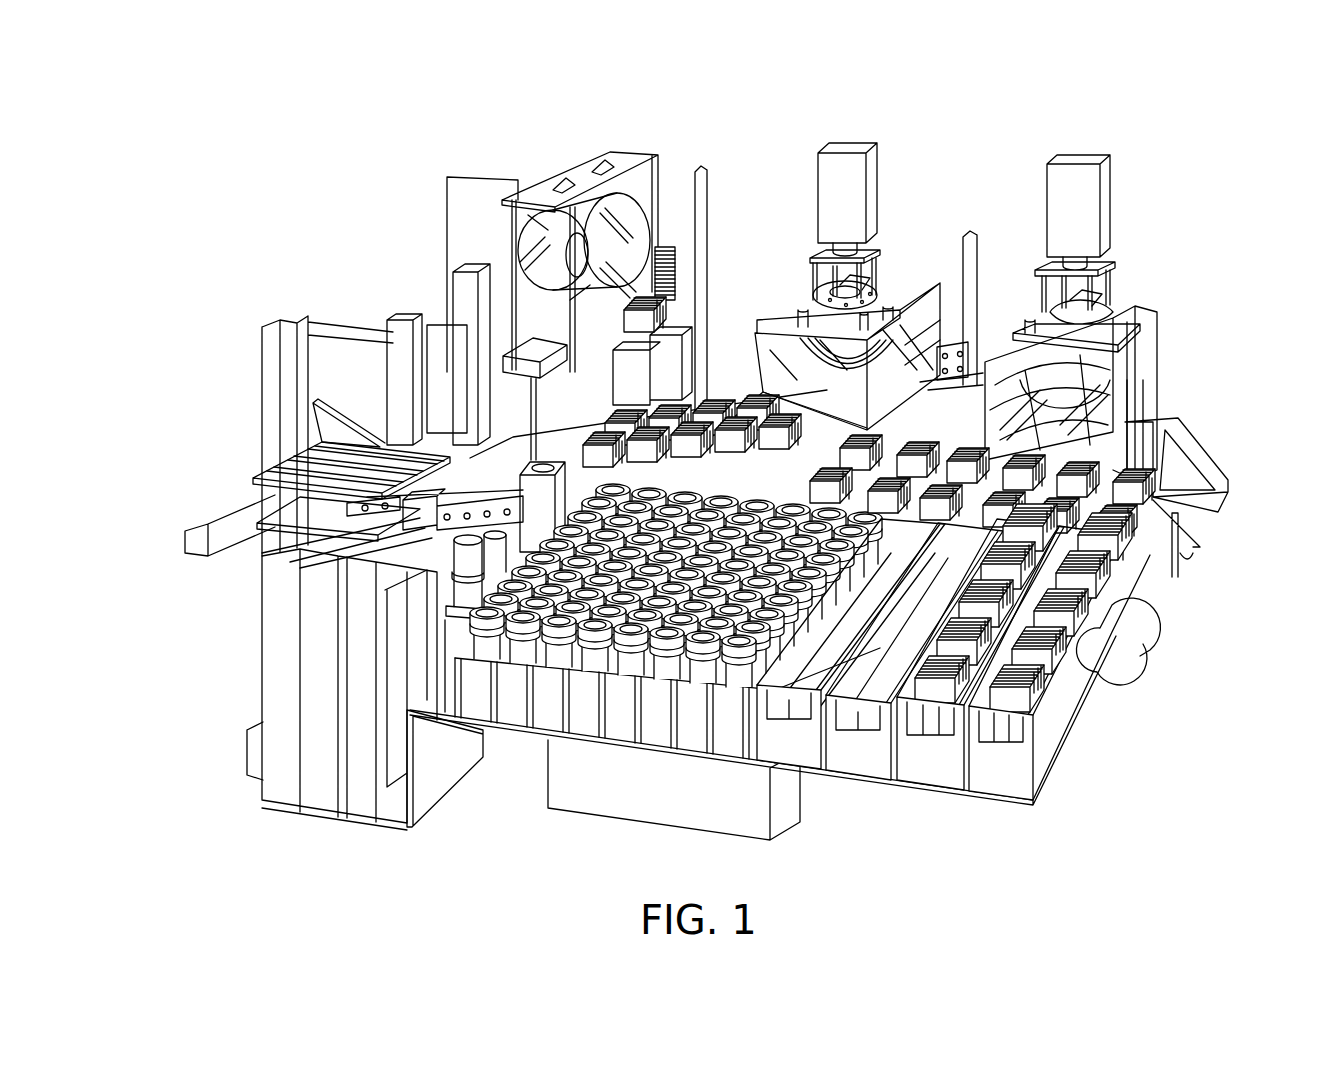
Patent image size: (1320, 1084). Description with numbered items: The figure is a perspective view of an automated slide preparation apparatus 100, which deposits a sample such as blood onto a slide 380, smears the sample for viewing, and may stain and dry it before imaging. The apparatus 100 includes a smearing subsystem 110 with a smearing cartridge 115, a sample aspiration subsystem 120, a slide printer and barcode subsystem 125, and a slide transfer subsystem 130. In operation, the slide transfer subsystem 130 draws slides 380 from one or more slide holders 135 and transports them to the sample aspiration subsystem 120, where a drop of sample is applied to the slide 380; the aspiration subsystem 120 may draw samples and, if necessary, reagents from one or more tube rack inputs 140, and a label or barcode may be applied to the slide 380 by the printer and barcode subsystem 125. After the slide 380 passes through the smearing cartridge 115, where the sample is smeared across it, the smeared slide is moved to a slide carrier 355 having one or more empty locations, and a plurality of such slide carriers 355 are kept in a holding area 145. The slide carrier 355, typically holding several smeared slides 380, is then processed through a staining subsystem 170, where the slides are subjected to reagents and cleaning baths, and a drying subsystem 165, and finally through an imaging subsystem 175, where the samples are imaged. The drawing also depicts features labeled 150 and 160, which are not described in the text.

The automated slide preparation apparatus 100 is at (346, 87).
The smearing subsystem 110 is at (570, 131).
The smearing cartridge 115 is at (622, 257).
The sample aspiration subsystem 120 is at (550, 360).
The slide printer and barcode subsystem 125 is at (397, 358).
The slide transfer subsystem 130 is at (320, 430).
The slide holder 135 is at (313, 663).
The tube rack input 140 is at (580, 710).
The holding area 145 is at (790, 747).
The chip rack 150 is at (930, 763).
The cylindrical fitting 160 is at (1120, 622).
The drying subsystem 165 is at (905, 385).
The staining subsystem 170 is at (688, 267).
The imaging subsystem 175 is at (860, 178).
The slide carrier 355 is at (710, 470).
The slide 380 is at (660, 262).